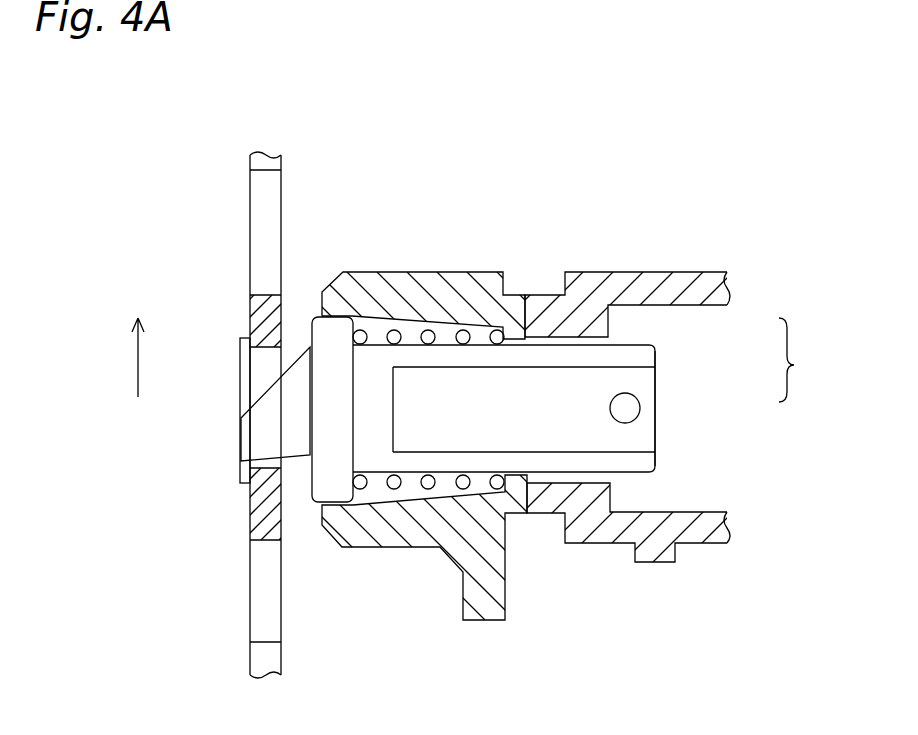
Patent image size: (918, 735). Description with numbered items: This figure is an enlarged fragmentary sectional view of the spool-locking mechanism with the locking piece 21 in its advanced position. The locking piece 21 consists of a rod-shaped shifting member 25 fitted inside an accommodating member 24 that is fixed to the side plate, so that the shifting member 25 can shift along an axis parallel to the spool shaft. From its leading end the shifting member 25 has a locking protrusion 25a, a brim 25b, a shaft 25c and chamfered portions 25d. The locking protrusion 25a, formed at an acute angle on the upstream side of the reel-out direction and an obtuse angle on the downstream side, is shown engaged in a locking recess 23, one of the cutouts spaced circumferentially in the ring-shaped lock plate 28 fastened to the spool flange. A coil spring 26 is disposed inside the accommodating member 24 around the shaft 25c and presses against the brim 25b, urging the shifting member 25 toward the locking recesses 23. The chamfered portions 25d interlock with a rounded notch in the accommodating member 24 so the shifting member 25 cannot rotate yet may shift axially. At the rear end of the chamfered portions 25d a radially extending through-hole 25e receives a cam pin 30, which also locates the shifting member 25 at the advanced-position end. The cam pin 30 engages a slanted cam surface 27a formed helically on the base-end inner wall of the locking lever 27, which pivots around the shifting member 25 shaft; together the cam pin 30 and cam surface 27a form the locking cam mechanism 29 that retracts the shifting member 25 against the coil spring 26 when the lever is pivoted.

The locking piece 21 is at (414, 322).
The locking recesses 23 is at (256, 428).
The accommodating member 24 is at (422, 530).
The shifting member 25 is at (562, 420).
The locking protrusion 25a is at (282, 405).
The brim 25b is at (332, 483).
The shaft 25c is at (615, 463).
The chamfered portions 25d is at (563, 393).
The through-hole 25e is at (691, 408).
The coil spring 26 is at (463, 483).
The locking lever 27 is at (617, 461).
The slanted cam surface 27a is at (612, 322).
The lock plate 28 is at (268, 507).
The locking cam mechanism 29 is at (807, 360).
The cam pin 30 is at (632, 402).